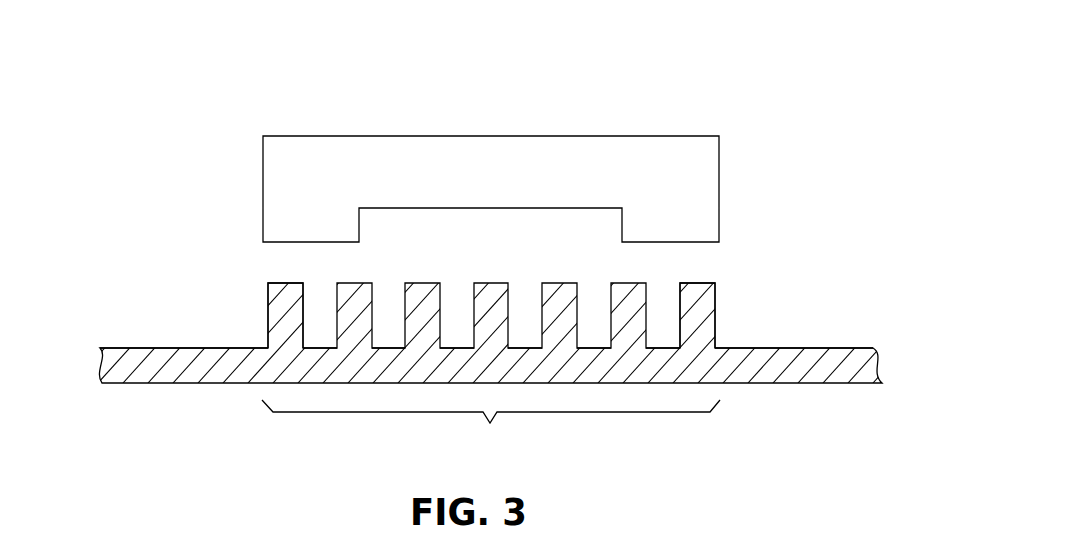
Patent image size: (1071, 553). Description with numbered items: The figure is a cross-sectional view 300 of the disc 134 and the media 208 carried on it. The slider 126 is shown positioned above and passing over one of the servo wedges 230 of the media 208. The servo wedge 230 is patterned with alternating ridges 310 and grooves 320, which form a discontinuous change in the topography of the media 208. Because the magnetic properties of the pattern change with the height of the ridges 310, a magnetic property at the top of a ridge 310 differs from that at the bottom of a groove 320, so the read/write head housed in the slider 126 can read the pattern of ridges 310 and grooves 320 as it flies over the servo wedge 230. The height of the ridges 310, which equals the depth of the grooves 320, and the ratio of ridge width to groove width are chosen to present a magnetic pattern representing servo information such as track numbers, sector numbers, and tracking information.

The cross-sectional view 300 is at (688, 77).
The slider 126 is at (637, 136).
The disc 134 is at (100, 355).
The media 208 is at (175, 348).
The ridges 310 is at (277, 281).
The grooves 320 is at (313, 347).
The servo wedge 230 is at (490, 423).